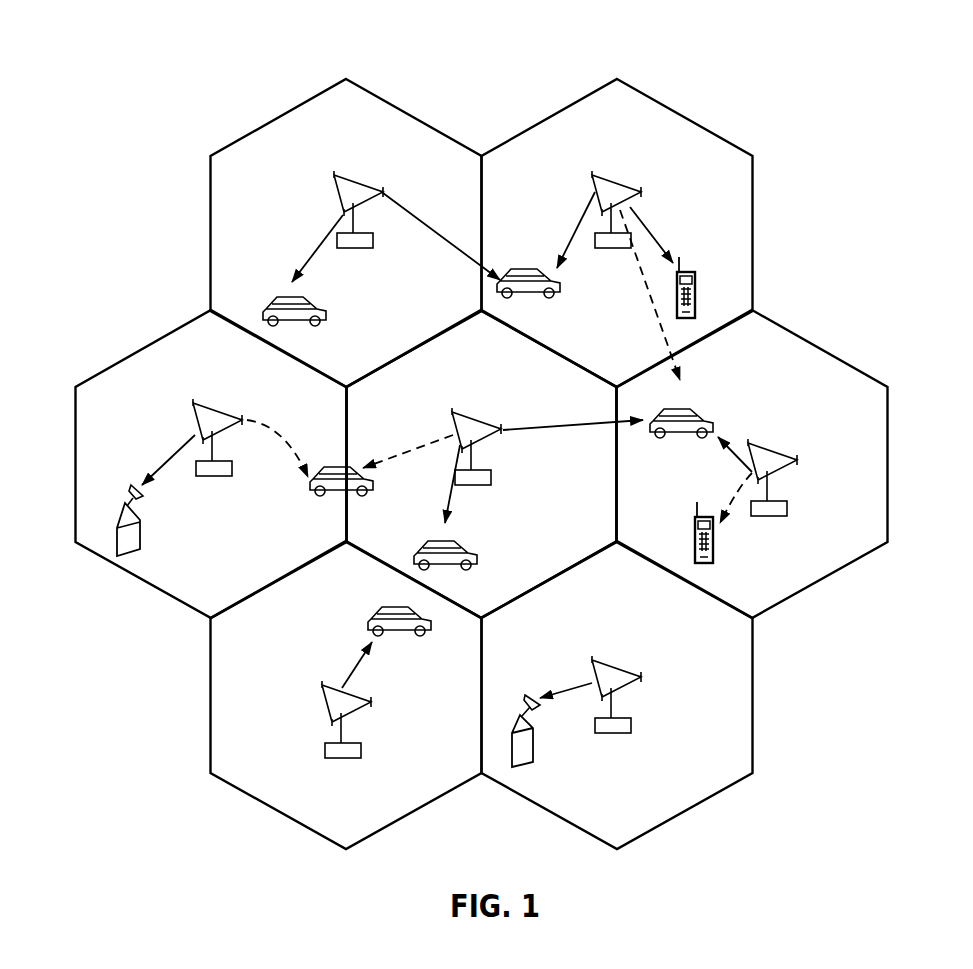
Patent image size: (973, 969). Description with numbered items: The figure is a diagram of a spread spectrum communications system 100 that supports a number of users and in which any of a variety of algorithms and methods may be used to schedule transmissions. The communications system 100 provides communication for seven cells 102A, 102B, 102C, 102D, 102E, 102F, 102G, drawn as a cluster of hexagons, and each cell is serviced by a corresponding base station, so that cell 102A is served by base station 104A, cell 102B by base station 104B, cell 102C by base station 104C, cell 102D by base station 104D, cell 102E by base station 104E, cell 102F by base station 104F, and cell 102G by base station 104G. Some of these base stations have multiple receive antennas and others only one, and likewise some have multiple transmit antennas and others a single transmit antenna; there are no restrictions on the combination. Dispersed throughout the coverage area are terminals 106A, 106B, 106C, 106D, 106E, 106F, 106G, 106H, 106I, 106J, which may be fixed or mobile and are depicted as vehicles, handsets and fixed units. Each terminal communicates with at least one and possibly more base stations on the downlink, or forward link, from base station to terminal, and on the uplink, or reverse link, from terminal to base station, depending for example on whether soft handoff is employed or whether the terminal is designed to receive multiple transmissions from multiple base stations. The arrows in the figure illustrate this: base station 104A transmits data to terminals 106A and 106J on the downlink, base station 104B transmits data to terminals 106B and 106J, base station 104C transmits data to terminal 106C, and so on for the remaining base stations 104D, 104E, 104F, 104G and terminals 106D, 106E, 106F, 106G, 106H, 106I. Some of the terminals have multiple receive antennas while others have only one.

The communications system 100 is at (806, 70).
The cell 102A is at (287, 113).
The cell 102B is at (677, 115).
The cell 102C is at (137, 352).
The cell 102D is at (482, 464).
The cell 102E is at (889, 464).
The cell 102F is at (212, 703).
The cell 102G is at (755, 673).
The base station 104A is at (343, 182).
The base station 104B is at (603, 185).
The base station 104C is at (208, 407).
The base station 104D is at (465, 420).
The base station 104E is at (757, 448).
The base station 104F is at (322, 685).
The base station 104G is at (602, 667).
The terminal 106A is at (290, 298).
The terminal 106B is at (687, 270).
The terminal 106C is at (131, 486).
The terminal 106D is at (445, 538).
The terminal 106E is at (688, 410).
The terminal 106F is at (400, 607).
The terminal 106G is at (523, 697).
The terminal 106H is at (332, 470).
The terminal 106I is at (698, 515).
The terminal 106J is at (535, 270).